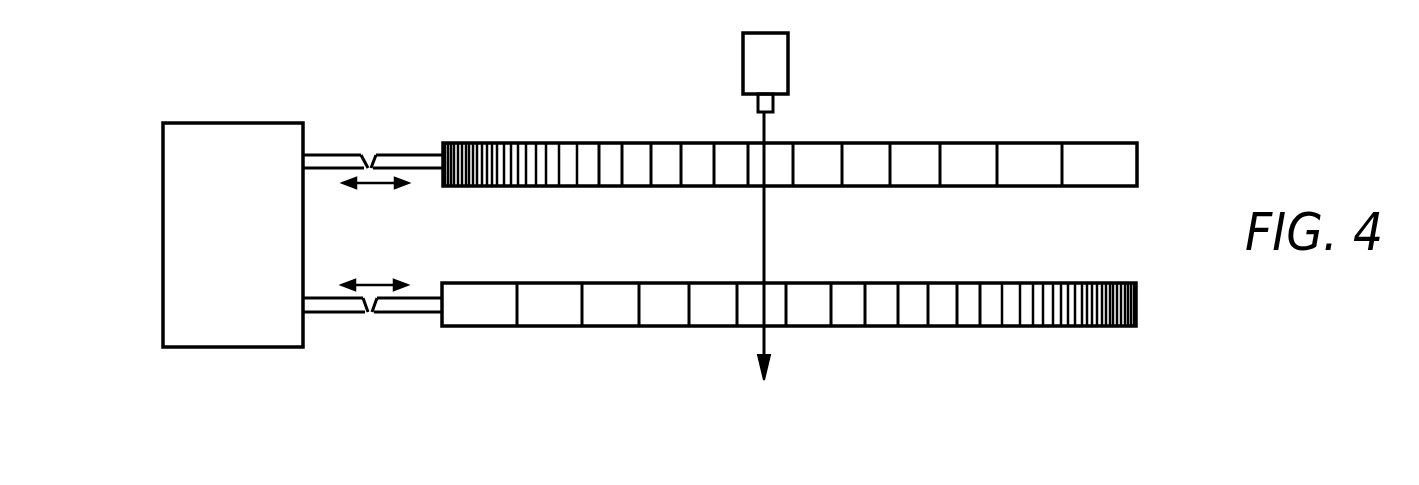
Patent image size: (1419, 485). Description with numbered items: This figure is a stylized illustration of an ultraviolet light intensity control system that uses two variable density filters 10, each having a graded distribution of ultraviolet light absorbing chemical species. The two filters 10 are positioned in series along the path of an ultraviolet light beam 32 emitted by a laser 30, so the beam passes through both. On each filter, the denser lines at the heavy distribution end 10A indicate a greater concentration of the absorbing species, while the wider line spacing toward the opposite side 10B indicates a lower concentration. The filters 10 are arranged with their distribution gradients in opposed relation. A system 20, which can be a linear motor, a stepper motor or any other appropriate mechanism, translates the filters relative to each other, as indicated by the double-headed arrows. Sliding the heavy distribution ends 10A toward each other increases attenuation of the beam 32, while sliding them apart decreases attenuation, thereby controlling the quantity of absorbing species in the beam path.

The filter 10 is at (813, 240).
The left-hand side of the filter 10A is at (443, 140).
The right-hand side of the filter 10B is at (1137, 160).
The system for translating the filters 20 is at (252, 123).
The laser 30 is at (788, 65).
The ultraviolet light beam 32 is at (764, 126).